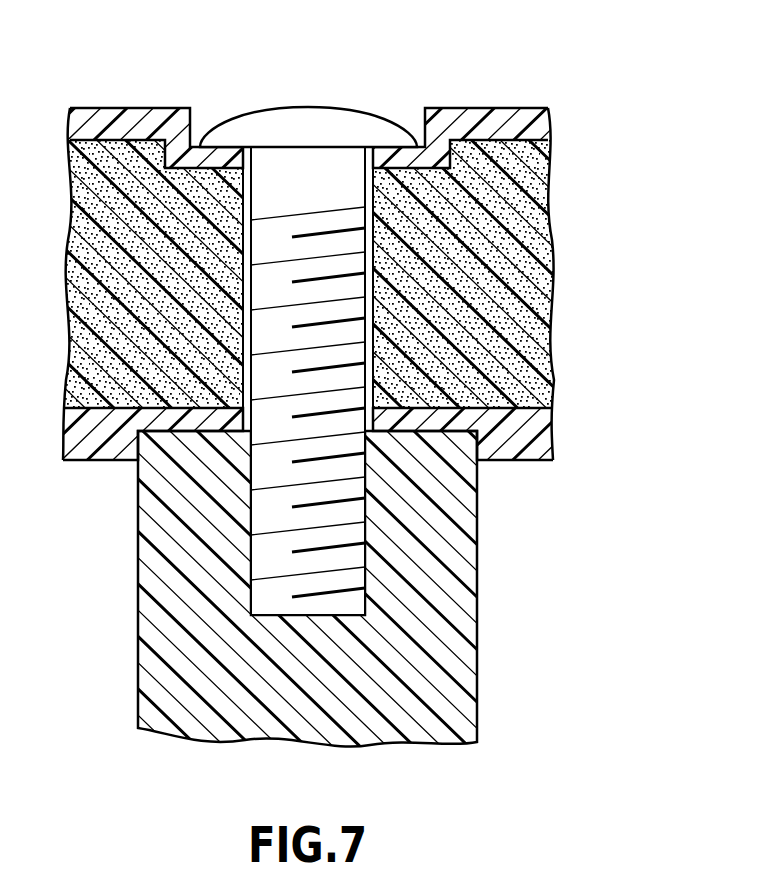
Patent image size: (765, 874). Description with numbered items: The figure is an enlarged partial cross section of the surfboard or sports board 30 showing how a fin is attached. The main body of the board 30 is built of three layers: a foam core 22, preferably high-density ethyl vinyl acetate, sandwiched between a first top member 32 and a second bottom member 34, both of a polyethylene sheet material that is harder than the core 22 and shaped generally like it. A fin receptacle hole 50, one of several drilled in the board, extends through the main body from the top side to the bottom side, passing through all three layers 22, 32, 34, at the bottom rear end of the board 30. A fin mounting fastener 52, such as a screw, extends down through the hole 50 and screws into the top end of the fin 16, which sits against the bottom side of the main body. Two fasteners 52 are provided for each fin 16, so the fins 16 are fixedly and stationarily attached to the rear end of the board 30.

The fin 16 is at (477, 628).
The core 22 is at (548, 183).
The surfboard or sports board 30 is at (546, 287).
The first top member 32 is at (550, 122).
The second bottom member 34 is at (553, 440).
The fin receptacle hole 50 is at (243, 213).
The fin mounting fastener 52 is at (295, 109).